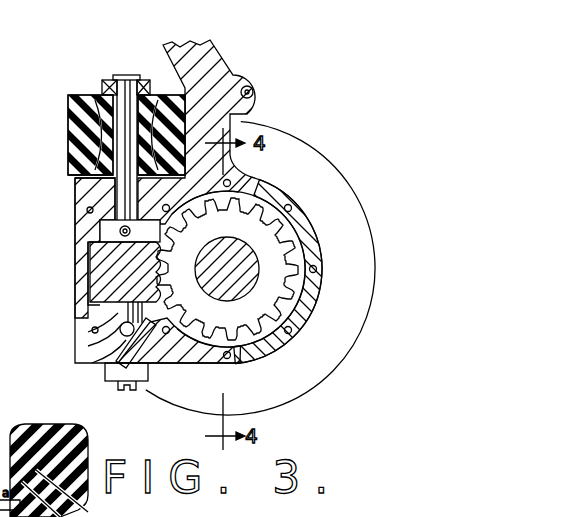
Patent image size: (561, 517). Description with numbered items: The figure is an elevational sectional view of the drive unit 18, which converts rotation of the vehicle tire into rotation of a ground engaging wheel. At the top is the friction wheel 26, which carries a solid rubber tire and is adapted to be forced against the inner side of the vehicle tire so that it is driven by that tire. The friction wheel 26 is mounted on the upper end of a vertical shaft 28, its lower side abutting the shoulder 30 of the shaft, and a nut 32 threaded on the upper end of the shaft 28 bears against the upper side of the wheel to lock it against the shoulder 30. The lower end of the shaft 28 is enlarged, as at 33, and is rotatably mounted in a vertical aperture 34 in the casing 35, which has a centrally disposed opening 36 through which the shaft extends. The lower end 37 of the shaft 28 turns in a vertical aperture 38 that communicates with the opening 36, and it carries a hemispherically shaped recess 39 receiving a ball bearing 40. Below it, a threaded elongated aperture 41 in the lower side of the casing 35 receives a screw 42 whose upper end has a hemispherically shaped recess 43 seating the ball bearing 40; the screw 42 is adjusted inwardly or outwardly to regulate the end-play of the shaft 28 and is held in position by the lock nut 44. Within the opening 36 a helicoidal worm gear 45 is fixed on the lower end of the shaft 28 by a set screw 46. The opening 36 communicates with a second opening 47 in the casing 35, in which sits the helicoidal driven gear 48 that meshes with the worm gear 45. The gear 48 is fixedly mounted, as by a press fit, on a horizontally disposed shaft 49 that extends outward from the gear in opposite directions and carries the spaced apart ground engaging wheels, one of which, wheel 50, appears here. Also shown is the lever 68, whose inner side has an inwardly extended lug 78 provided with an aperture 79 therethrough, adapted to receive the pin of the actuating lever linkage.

The drive unit 18 is at (366, 337).
The friction wheel 26 is at (78, 120).
The shaft 28 is at (130, 78).
The shoulder 30 is at (95, 165).
The nut 32 is at (103, 86).
The enlarged lower end of shaft 33 is at (120, 210).
The vertical aperture 34 is at (110, 198).
The casing 35 is at (70, 256).
The centrally disposed opening 36 is at (94, 282).
The lower end of shaft 37 is at (115, 320).
The vertical aperture 38 is at (122, 306).
The hemispherically shaped recess 39 is at (100, 346).
The ball bearing 40 is at (112, 360).
The threaded elongated aperture 41 is at (105, 370).
The screw 42 is at (118, 387).
The hemispherically shaped recess 43 is at (142, 372).
The lock nut 44 is at (150, 393).
The helicoidal worm gear 45 is at (88, 296).
The set screw 46 is at (135, 232).
The second opening 47 is at (285, 225).
The helicoidal driven gear 48 is at (273, 272).
The horizontally disposed shaft 49 is at (245, 283).
The ground engaging wheel 50 is at (355, 242).
The lever 68 is at (205, 54).
The lug 78 is at (260, 88).
The aperture 79 is at (253, 93).